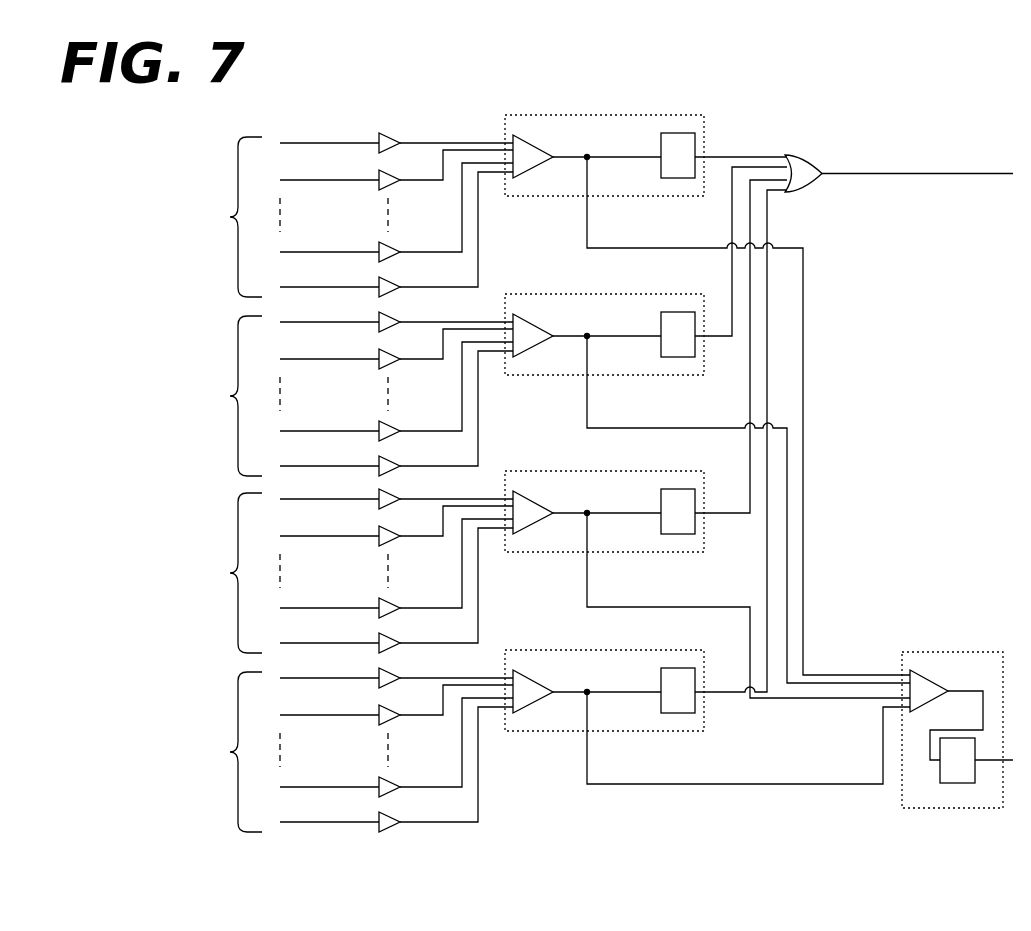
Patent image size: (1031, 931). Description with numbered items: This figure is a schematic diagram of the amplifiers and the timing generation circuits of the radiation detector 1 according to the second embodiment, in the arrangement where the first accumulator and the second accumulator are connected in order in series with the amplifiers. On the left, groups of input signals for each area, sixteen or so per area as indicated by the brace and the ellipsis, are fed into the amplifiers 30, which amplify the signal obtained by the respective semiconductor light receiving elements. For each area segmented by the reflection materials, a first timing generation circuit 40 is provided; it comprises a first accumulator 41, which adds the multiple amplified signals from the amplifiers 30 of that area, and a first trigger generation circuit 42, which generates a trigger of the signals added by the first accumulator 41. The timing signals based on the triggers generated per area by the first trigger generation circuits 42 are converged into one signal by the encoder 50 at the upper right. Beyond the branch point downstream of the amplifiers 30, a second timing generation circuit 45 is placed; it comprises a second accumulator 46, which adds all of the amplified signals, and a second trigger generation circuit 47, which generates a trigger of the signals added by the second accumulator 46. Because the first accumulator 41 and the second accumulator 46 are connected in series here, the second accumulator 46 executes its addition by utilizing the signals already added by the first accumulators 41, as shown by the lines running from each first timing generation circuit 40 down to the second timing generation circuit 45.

The radiation detector 1 is at (993, 136).
The amplifiers 30 is at (383, 139).
The first timing generation circuit 40 is at (617, 140).
The first accumulator 41 is at (527, 176).
The first trigger generation circuit 42 is at (658, 170).
The second timing generation circuit 45 is at (966, 675).
The second accumulator 46 is at (929, 711).
The second trigger generation circuit 47 is at (938, 766).
The encoder 50 is at (803, 189).